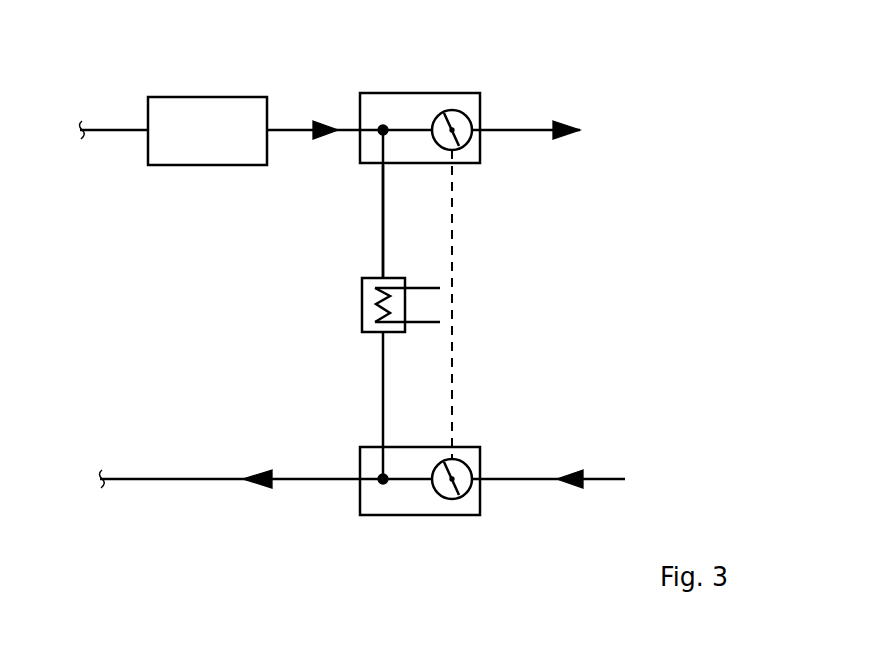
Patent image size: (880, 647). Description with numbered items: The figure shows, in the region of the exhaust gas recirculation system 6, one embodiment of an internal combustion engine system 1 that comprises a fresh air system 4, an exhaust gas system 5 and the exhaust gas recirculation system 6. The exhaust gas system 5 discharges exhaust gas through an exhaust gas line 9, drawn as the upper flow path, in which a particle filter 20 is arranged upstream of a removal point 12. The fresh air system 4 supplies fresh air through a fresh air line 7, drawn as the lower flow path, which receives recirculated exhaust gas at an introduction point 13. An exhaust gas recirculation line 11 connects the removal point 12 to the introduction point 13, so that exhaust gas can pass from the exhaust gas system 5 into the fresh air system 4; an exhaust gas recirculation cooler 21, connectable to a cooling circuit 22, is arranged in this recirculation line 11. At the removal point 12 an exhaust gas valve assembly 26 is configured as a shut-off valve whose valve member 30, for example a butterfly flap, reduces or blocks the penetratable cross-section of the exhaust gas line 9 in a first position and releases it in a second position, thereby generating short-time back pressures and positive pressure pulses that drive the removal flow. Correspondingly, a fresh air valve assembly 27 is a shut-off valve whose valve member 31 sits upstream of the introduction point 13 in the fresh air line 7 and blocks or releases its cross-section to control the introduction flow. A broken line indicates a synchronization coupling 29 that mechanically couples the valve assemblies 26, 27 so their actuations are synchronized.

The internal combustion engine system 1 is at (615, 118).
The fresh air system 4 is at (176, 481).
The exhaust gas system 5 is at (94, 129).
The exhaust gas recirculation system 6 is at (383, 202).
The fresh air line 7 is at (293, 483).
The exhaust gas line 9 is at (293, 128).
The exhaust gas recirculation line 11 is at (383, 243).
The removal point 12 is at (384, 125).
The introduction point 13 is at (383, 486).
The particle filter 20 is at (207, 97).
The exhaust gas recirculation cooler 21 is at (362, 303).
The cooling circuit 22 is at (414, 288).
The exhaust gas valve assembly 26 is at (420, 93).
The fresh air valve assembly 27 is at (420, 515).
The synchronization coupling 29 is at (452, 263).
The valve member 30 is at (461, 113).
The valve member 31 is at (466, 494).